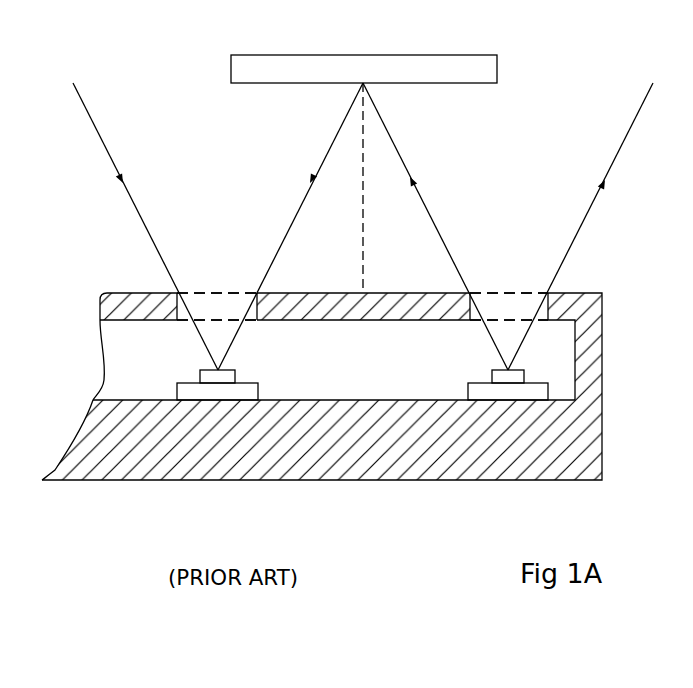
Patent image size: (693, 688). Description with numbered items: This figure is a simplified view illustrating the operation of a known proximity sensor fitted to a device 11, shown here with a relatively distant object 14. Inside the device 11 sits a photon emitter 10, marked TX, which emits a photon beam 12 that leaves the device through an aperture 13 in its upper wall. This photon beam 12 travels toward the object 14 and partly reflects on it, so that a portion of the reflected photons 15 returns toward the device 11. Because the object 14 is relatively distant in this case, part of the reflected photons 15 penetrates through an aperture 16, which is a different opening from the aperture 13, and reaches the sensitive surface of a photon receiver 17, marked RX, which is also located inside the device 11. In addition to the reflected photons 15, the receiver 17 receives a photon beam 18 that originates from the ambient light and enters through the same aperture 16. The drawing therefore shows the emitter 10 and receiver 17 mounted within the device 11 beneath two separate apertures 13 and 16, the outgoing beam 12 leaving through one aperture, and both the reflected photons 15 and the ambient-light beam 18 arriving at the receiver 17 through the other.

The photon emitter 10 is at (522, 386).
The device 11 is at (343, 482).
The photon beam 12 is at (400, 147).
The aperture 13 is at (512, 305).
The object 14 is at (466, 54).
The reflected photons 15 is at (281, 243).
The aperture 16 is at (218, 307).
The photon receiver 17 is at (196, 388).
The photon beam 18 is at (100, 137).